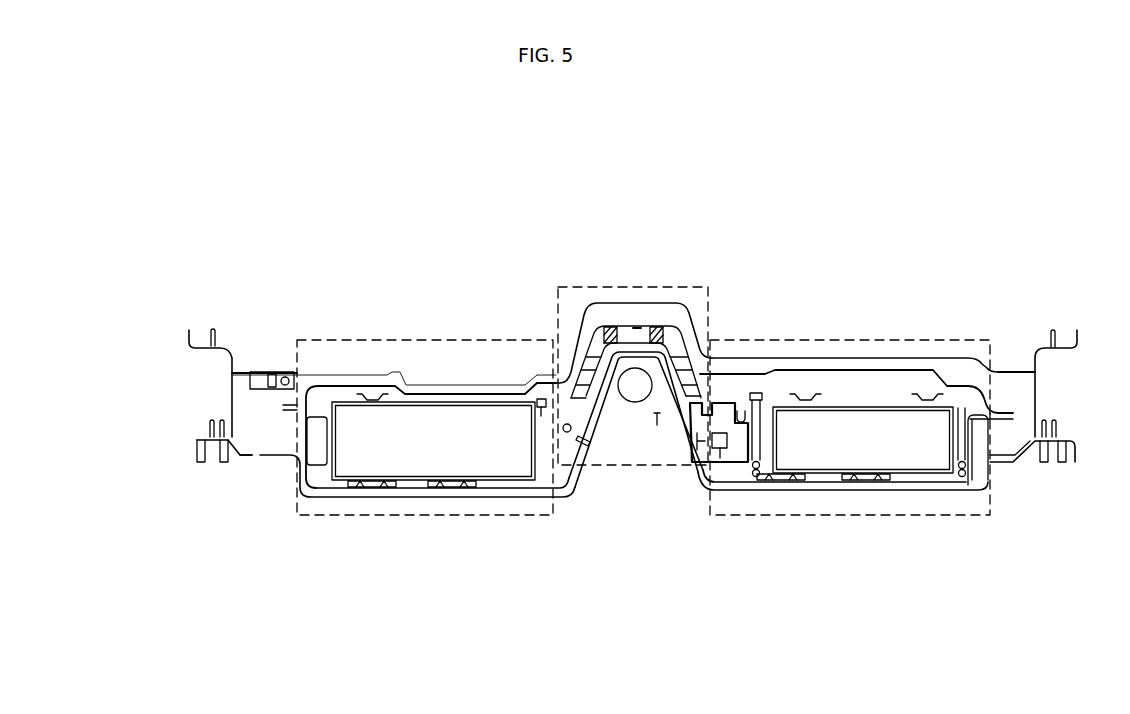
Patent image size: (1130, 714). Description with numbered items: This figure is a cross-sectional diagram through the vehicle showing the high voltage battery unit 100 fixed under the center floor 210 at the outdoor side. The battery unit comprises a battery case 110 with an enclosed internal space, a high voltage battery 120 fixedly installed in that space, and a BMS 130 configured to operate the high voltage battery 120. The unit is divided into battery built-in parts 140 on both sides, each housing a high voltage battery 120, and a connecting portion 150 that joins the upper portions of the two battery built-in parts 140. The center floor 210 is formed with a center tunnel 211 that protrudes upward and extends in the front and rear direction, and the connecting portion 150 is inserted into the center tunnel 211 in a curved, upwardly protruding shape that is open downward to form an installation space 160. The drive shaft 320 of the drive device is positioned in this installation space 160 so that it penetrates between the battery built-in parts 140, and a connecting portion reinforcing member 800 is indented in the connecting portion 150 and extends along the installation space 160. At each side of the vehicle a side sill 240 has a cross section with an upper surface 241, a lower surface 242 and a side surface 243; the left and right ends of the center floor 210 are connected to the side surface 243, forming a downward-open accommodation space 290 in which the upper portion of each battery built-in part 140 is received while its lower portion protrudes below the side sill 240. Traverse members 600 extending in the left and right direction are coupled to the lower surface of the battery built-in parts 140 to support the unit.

The high voltage battery unit 100 is at (949, 379).
The battery case 110 is at (363, 383).
The high voltage battery 120 is at (402, 450).
The BMS 130 is at (720, 415).
The battery built-in part 140 is at (425, 340).
The connecting portion 150 is at (633, 287).
The installation space 160 is at (657, 413).
The center floor 210 is at (825, 358).
The center tunnel 211 is at (570, 337).
The side sill 240 is at (222, 345).
The upper surface 241 is at (203, 343).
The lower surface 242 is at (197, 462).
The side surface 243 is at (232, 373).
The accommodation space 290 is at (268, 437).
The drive shaft 320 is at (635, 410).
The traverse member 600 is at (450, 496).
The connecting portion reinforcing member 800 is at (607, 407).